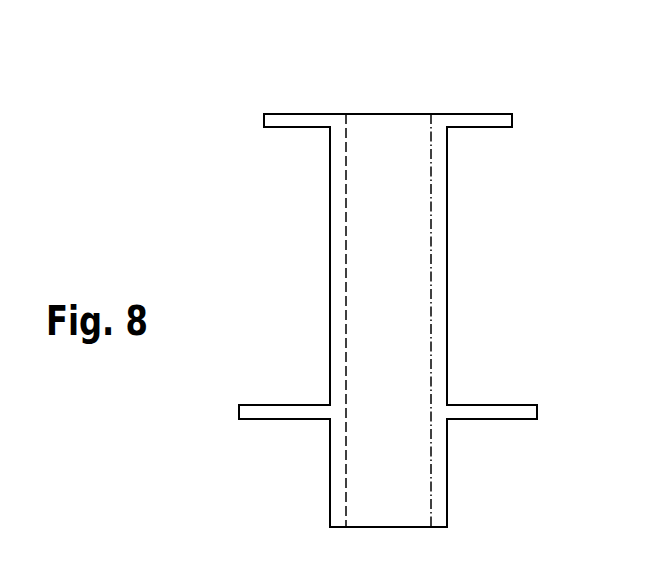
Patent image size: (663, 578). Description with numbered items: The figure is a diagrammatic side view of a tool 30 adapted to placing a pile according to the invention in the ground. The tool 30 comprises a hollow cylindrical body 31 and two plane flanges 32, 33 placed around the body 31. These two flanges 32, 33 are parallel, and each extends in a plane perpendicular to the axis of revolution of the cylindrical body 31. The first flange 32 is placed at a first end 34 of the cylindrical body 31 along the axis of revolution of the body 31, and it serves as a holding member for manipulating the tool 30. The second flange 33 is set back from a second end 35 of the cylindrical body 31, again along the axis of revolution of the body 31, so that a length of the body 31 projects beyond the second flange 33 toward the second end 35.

The tool 30 is at (278, 257).
The hollow cylindrical body 31 is at (405, 280).
The first flange 32 is at (498, 118).
The second flange 33 is at (507, 411).
The first end 34 is at (440, 147).
The second end 35 is at (336, 470).